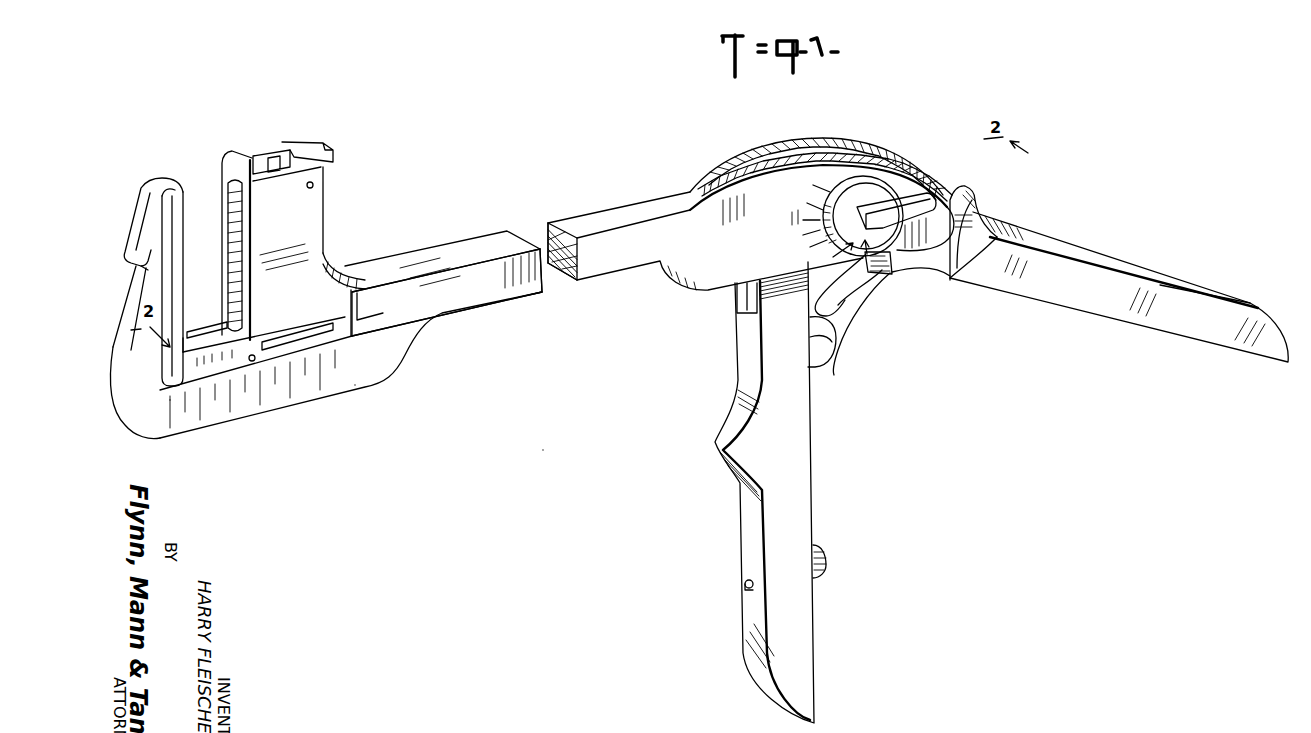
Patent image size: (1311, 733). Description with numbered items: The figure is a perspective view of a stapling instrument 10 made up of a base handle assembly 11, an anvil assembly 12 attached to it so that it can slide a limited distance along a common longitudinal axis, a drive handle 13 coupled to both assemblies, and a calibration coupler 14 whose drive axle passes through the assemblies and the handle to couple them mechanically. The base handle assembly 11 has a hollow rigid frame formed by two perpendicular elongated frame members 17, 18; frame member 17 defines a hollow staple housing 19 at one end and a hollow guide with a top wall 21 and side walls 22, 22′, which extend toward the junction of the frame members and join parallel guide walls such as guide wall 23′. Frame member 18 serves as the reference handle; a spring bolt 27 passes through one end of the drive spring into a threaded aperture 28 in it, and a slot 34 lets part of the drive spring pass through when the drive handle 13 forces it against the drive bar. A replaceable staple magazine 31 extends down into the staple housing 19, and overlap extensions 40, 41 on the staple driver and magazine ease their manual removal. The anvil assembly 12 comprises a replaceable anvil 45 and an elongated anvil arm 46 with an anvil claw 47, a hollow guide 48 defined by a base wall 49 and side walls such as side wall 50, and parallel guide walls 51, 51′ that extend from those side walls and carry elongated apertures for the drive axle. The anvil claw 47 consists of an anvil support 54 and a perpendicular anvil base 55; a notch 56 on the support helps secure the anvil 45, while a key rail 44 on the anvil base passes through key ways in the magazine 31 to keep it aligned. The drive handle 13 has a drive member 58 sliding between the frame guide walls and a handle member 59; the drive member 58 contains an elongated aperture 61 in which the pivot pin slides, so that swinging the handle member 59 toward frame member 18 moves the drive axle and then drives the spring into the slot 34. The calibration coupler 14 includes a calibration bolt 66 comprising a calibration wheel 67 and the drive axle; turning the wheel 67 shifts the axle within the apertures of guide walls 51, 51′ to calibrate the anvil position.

The stapling instrument 10 is at (556, 467).
The base handle assembly 11 is at (728, 364).
The anvil assembly 12 is at (407, 376).
The drive handle 13 is at (1130, 260).
The calibration coupler 14 is at (865, 260).
The frame member 17 is at (465, 252).
The frame member 18 is at (778, 445).
The staple housing 19 is at (302, 232).
The top wall 21 is at (567, 236).
The side wall 22 is at (579, 245).
The side wall 22′ is at (549, 226).
The guide wall 23′ is at (815, 150).
The spring bolt 27 is at (828, 562).
The threaded aperture 28 is at (745, 586).
The staple magazine 31 is at (226, 216).
The slot 34 is at (736, 298).
The overlap extension 40 is at (305, 143).
The overlap extension 41 is at (260, 152).
The key rail 44 is at (197, 332).
The anvil 45 is at (160, 184).
The anvil arm 46 is at (503, 303).
The anvil claw 47 is at (276, 404).
The hollow guide 48 is at (455, 298).
The base wall 49 is at (553, 272).
The side wall 50 is at (400, 290).
The guide wall 51 is at (932, 180).
The guide wall 51′ is at (883, 152).
The anvil support 54 is at (130, 352).
The anvil base 55 is at (352, 388).
The notch 56 is at (140, 278).
The drive member 58 is at (878, 298).
The handle member 59 is at (1197, 283).
The elongated aperture 61 is at (827, 357).
The calibration bolt 66 is at (856, 193).
The calibration wheel 67 is at (882, 190).